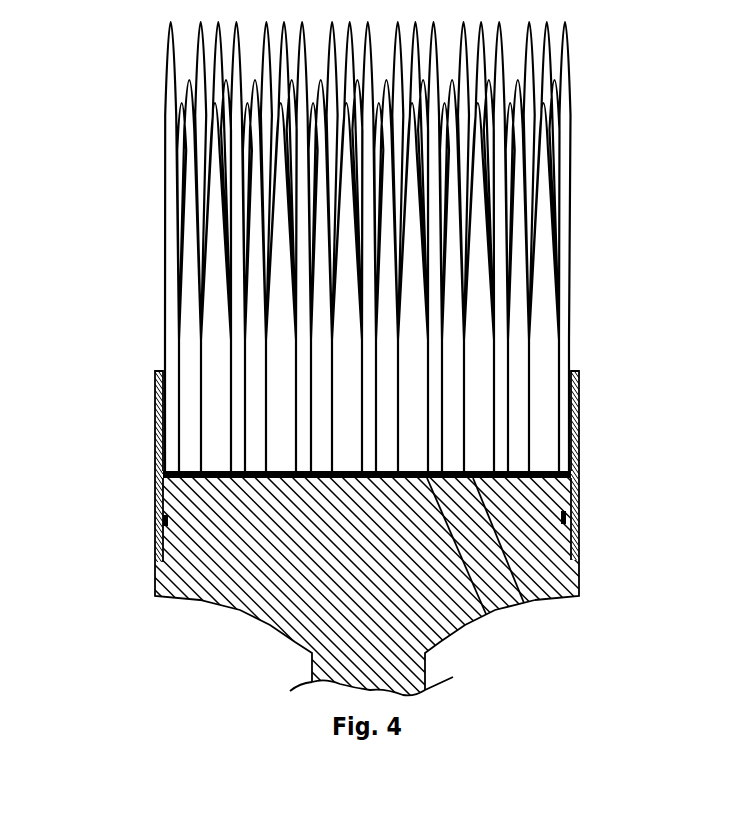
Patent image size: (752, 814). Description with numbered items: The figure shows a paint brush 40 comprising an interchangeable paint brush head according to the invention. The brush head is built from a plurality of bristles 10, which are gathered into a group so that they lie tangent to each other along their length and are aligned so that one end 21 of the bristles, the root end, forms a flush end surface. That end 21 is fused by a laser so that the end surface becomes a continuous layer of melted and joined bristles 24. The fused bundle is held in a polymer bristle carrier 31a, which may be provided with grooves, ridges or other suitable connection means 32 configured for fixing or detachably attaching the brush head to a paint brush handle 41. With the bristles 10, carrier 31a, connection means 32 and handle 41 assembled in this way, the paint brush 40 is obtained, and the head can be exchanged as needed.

The paint brush 40 is at (95, 272).
The bristles 10 is at (555, 110).
The polymer bristle carrier 31a is at (582, 417).
The paint brush handle 41 is at (222, 602).
The connection means 32 is at (560, 583).
The one end of the bristles 21 is at (527, 603).
The continuous layer of melted and joined bristles 24 is at (486, 616).